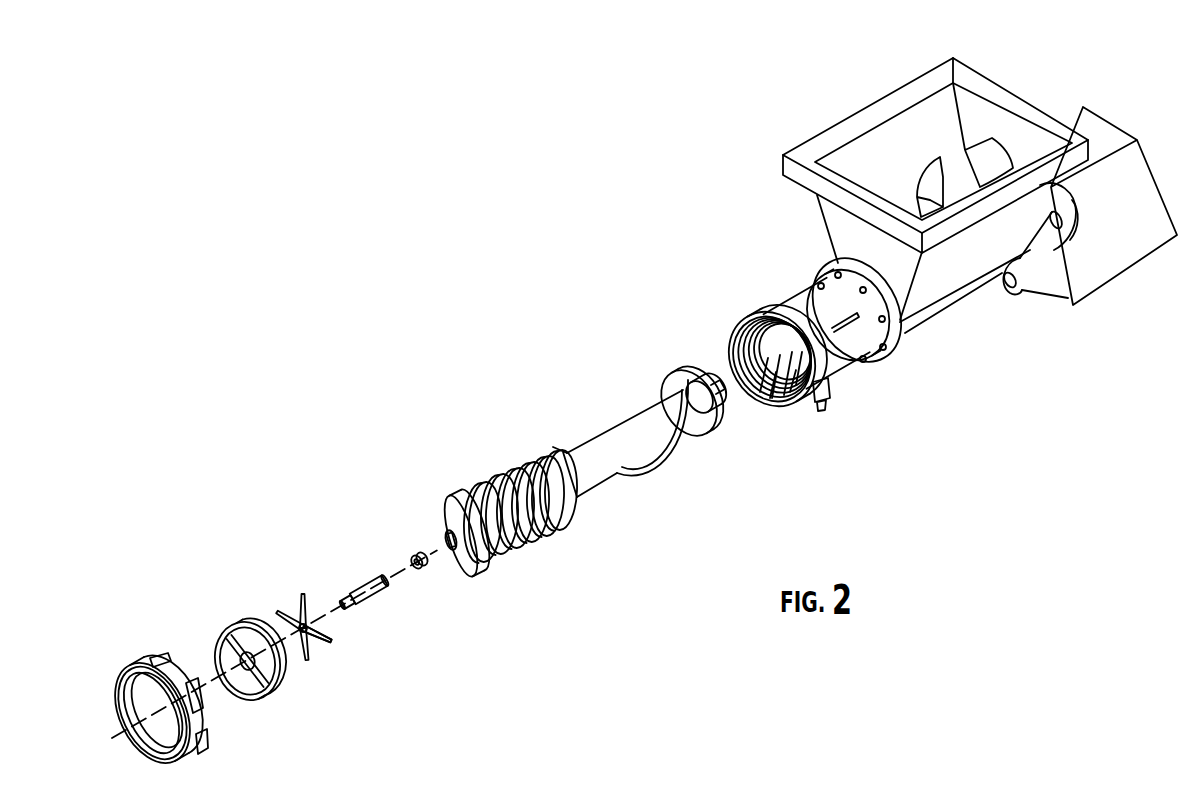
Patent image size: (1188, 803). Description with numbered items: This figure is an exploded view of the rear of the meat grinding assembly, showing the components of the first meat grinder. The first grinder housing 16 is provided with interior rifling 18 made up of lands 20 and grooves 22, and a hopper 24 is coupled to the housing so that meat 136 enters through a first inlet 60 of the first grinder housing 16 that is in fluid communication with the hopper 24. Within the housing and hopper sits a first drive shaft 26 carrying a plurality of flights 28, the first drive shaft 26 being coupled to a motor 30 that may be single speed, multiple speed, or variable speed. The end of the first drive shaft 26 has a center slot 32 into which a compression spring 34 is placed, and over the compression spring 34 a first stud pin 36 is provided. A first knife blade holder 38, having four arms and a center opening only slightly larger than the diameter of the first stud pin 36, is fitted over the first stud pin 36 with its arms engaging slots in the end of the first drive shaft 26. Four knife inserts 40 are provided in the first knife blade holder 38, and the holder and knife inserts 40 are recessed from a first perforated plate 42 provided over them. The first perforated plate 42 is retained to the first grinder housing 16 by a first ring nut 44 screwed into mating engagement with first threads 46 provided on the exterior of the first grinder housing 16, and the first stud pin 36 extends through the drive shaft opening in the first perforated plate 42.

The first grinder housing 16 is at (752, 305).
The interior rifling 18 is at (768, 392).
The lands 20 is at (752, 350).
The grooves 22 is at (777, 397).
The hopper 24 is at (876, 102).
The first drive shaft 26 is at (593, 437).
The flights 28 is at (478, 482).
The motor 30 is at (1103, 297).
The center slot 32 is at (438, 553).
The compression spring 34 is at (416, 552).
The first stud pin 36 is at (364, 578).
The first knife blade holder 38 is at (302, 592).
The knife inserts 40 is at (317, 643).
The first perforated plate 42 is at (223, 625).
The first ring nut 44 is at (143, 658).
The first threads 46 is at (822, 407).
The first inlet 60 is at (889, 266).
The meat 136 is at (992, 138).